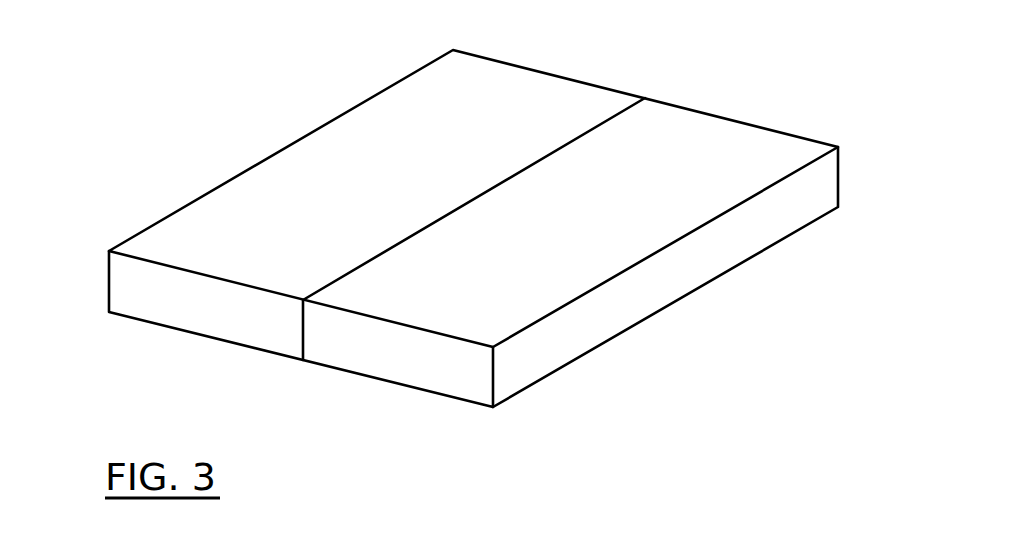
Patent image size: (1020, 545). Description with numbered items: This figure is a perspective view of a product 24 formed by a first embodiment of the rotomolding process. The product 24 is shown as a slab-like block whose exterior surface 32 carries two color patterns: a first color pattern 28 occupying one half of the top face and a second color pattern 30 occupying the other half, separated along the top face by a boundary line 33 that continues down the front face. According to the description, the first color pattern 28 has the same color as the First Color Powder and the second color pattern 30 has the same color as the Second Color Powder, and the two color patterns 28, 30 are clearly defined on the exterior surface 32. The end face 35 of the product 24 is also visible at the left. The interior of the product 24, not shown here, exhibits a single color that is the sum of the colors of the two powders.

The product 24 is at (457, 249).
The first color pattern 28 is at (443, 117).
The second color pattern 30 is at (717, 143).
The exterior surface 32 is at (243, 248).
The seam 33 is at (645, 98).
The end face 35 is at (162, 313).